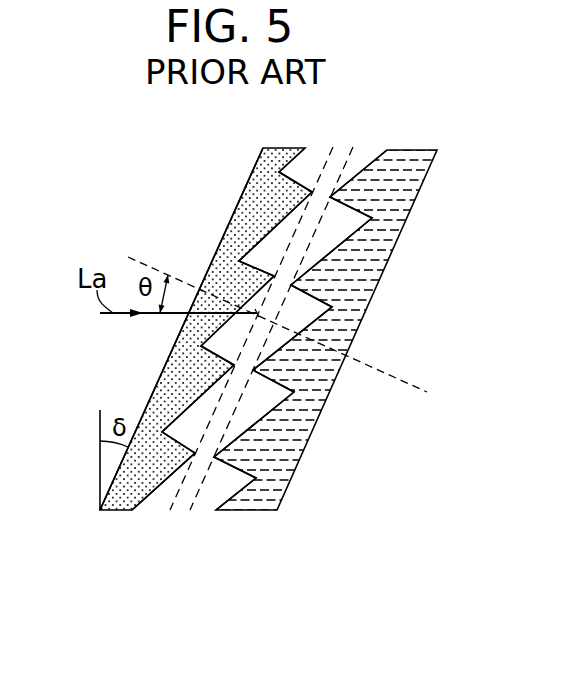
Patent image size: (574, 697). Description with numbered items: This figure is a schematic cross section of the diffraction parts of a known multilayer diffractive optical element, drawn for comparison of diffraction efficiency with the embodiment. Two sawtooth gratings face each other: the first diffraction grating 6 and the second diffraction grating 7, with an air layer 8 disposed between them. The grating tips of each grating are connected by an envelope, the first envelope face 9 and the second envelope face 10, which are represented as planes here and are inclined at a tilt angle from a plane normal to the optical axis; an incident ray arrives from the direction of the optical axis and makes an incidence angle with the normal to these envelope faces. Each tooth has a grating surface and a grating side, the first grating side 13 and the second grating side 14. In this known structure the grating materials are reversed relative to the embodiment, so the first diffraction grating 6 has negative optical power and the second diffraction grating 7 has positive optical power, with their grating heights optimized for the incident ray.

The first diffraction grating 6 is at (253, 218).
The second diffraction grating 7 is at (368, 258).
The air layer 8 is at (308, 193).
The first envelope face 9 is at (197, 390).
The second envelope face 10 is at (230, 420).
The first grating side 13 is at (181, 447).
The second grating side 14 is at (251, 467).